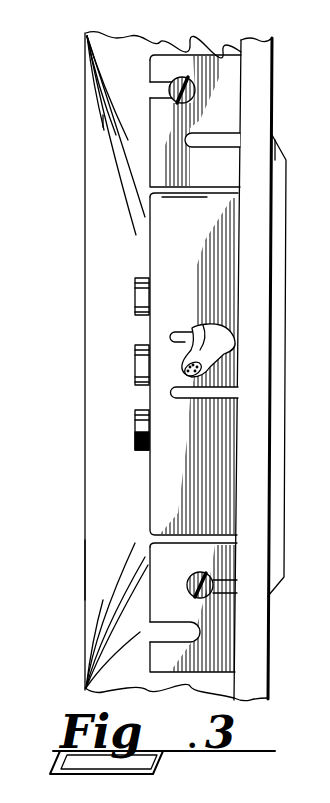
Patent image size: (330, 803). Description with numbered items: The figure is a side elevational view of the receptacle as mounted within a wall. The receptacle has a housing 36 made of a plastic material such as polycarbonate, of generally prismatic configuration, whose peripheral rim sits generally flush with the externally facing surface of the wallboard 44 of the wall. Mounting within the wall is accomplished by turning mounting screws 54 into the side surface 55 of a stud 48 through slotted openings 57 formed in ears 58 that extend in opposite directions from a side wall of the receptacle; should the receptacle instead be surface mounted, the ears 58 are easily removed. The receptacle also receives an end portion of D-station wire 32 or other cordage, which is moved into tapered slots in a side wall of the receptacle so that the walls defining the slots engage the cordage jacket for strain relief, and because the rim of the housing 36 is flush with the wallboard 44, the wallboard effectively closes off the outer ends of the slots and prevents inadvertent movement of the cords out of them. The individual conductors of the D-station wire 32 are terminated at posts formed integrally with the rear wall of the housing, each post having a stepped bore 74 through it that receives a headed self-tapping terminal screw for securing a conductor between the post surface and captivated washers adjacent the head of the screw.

The D-station wire 32 is at (210, 349).
The housing 36 is at (146, 327).
The wallboard 44 is at (262, 99).
The stud 48 is at (92, 378).
The mounting screws 54 is at (172, 82).
The side surface 55 is at (93, 552).
The slotted openings 57 is at (169, 88).
The ears 58 is at (228, 70).
The stepped bore 74 is at (135, 433).